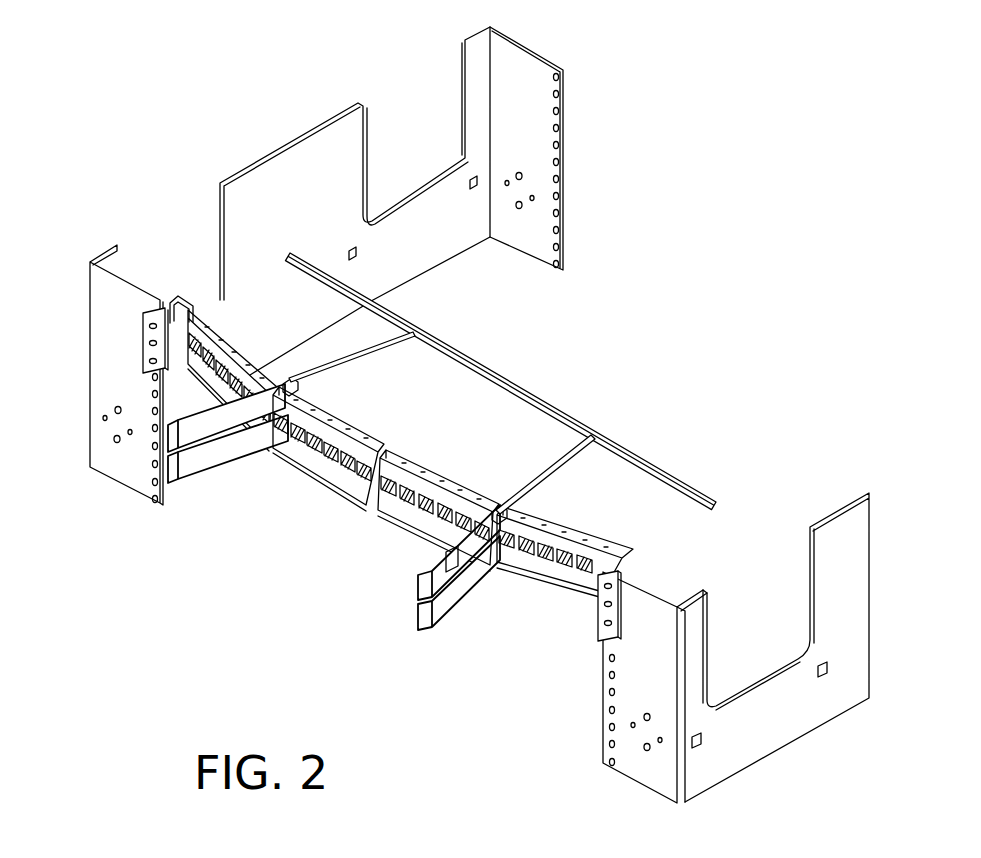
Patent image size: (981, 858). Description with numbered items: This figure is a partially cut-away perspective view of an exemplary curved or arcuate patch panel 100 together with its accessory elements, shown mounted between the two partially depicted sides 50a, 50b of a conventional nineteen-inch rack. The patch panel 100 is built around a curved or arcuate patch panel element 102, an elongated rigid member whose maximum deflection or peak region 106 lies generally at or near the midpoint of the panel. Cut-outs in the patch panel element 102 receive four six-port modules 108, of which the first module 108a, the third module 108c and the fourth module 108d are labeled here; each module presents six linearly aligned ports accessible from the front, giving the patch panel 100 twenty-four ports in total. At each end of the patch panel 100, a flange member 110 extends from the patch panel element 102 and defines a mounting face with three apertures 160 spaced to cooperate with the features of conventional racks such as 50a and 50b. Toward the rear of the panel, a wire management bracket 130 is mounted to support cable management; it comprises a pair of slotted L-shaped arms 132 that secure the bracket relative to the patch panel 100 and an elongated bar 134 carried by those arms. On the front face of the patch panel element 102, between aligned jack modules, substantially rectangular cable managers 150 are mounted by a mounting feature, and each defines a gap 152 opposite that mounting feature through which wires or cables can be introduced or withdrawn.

The rack 50a is at (115, 336).
The rack 50b is at (843, 533).
The patch panel 100 is at (419, 468).
The patch panel element 102 is at (419, 468).
The peak region 106 is at (365, 551).
The module 108 is at (265, 468).
The module 108a is at (213, 307).
The module 108c is at (390, 517).
The module 108d is at (543, 577).
The flange member 110 is at (150, 363).
The wire management bracket 130 is at (477, 353).
The L-shaped arm 132 is at (393, 340).
The elongated bar 134 is at (664, 468).
The cable manager 150 is at (183, 423).
The gap 152 is at (168, 474).
The aperture 160 is at (613, 633).